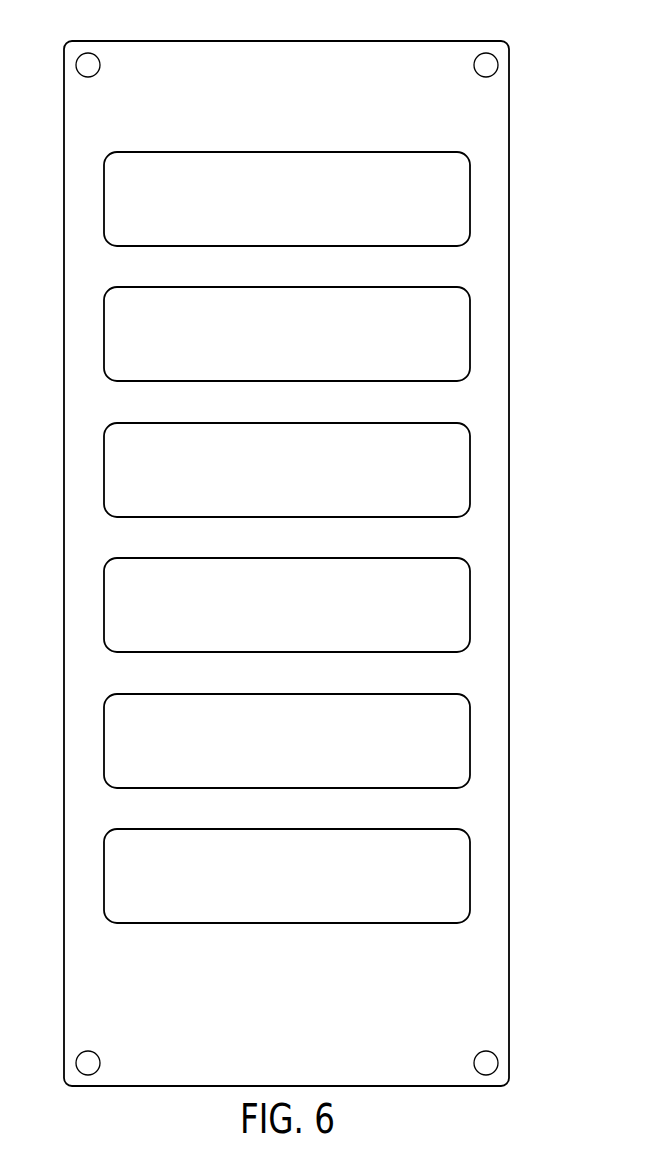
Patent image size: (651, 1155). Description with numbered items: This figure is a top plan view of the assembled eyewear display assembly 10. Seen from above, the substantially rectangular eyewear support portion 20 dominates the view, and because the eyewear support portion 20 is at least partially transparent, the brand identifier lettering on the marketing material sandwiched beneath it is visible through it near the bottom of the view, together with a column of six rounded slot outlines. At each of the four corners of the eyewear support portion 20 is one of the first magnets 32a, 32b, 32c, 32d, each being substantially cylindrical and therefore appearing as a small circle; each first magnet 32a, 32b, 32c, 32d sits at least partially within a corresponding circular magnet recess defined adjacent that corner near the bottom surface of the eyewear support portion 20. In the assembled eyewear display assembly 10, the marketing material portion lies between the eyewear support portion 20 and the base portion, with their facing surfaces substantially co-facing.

The eyewear display assembly 10 is at (310, 561).
The eyewear support portion 20 is at (492, 533).
The first magnet 32a is at (88, 1064).
The first magnet 32b is at (486, 1064).
The first magnet 32c is at (88, 64).
The first magnet 32d is at (485, 64).